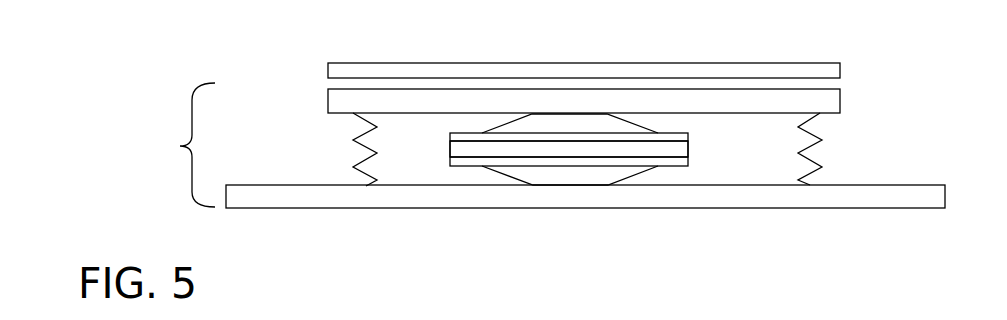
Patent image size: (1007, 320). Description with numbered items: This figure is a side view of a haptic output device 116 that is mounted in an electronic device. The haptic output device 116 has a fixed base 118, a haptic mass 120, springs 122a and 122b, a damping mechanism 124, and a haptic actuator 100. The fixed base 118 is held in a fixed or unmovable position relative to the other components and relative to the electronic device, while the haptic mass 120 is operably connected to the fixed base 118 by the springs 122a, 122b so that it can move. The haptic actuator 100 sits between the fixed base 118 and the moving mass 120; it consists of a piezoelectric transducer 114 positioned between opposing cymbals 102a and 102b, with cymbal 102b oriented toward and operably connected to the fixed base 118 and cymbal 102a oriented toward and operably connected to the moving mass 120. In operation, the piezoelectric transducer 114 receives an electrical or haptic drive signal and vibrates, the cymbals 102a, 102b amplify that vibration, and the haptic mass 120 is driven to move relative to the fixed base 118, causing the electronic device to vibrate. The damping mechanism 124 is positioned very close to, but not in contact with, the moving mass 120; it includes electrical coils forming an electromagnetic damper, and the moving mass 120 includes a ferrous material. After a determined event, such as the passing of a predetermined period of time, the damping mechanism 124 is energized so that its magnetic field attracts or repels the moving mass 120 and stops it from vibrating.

The haptic actuator 100 is at (450, 148).
The cymbal 102a is at (620, 117).
The cymbal 102b is at (625, 178).
The piezoelectric transducer 114 is at (688, 150).
The haptic output device 116 is at (158, 145).
The fixed base 118 is at (857, 208).
The haptic mass 120 is at (842, 98).
The spring 122a is at (365, 160).
The spring 122b is at (810, 156).
The damping mechanism 124 is at (327, 72).